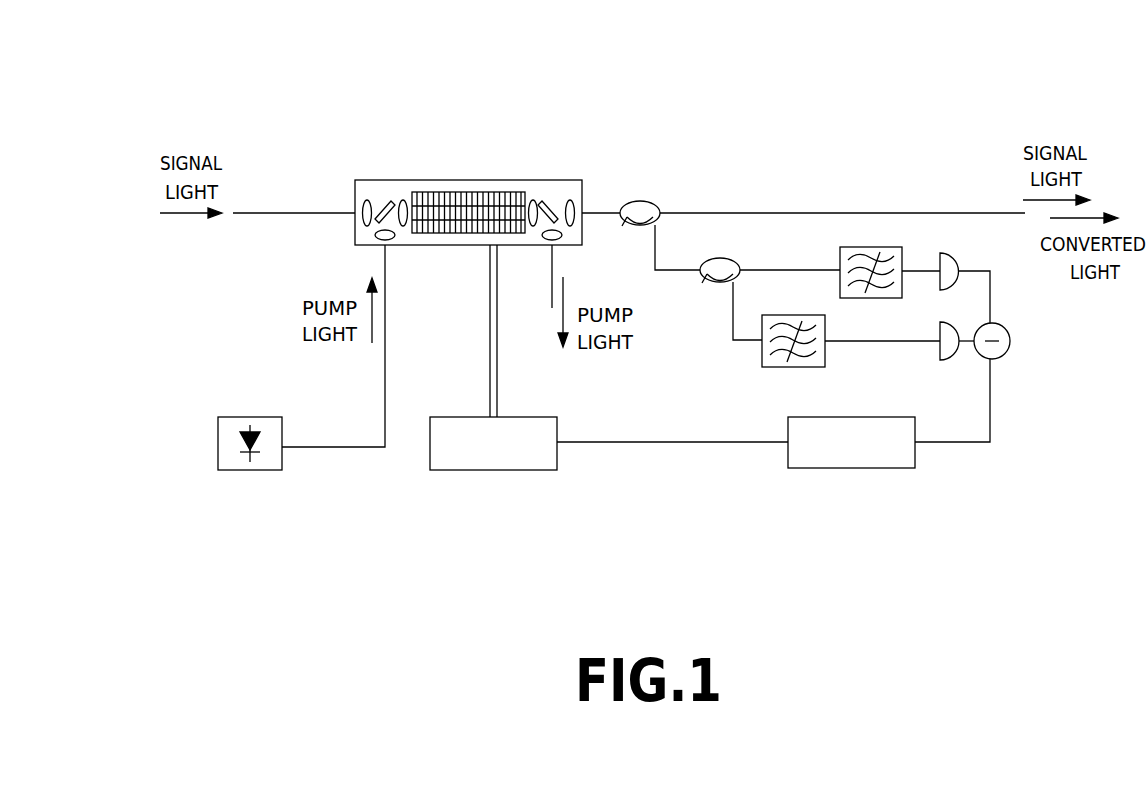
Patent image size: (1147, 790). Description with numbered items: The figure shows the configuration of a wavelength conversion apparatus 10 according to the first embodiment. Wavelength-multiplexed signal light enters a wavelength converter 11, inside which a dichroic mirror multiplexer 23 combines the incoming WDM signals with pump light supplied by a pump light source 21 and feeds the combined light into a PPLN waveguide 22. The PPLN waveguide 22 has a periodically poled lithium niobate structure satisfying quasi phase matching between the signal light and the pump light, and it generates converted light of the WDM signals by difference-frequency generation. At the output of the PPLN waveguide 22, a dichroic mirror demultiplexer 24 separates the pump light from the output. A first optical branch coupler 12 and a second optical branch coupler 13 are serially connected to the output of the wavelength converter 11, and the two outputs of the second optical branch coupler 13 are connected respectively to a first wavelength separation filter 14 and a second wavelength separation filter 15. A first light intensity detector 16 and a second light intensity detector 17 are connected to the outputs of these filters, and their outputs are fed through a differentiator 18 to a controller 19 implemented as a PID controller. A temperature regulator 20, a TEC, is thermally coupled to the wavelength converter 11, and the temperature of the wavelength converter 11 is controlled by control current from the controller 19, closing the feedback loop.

The wavelength conversion apparatus 10 is at (700, 97).
The wavelength converter 11 is at (433, 180).
The first optical branch coupler 12 is at (641, 201).
The second optical branch coupler 13 is at (724, 259).
The first wavelength separation filter 14 is at (840, 255).
The second wavelength separation filter 15 is at (762, 352).
The first light intensity detector 16 is at (952, 256).
The second light intensity detector 17 is at (949, 361).
The differentiator 18 is at (1011, 341).
The controller (PID) 19 is at (885, 417).
The temperature regulator (TEC) 20 is at (537, 417).
The pump light source 21 is at (252, 417).
The PPLN waveguide 22 is at (489, 200).
The dichroic mirror multiplexer 23 is at (384, 200).
The dichroic mirror demultiplexer 24 is at (552, 200).